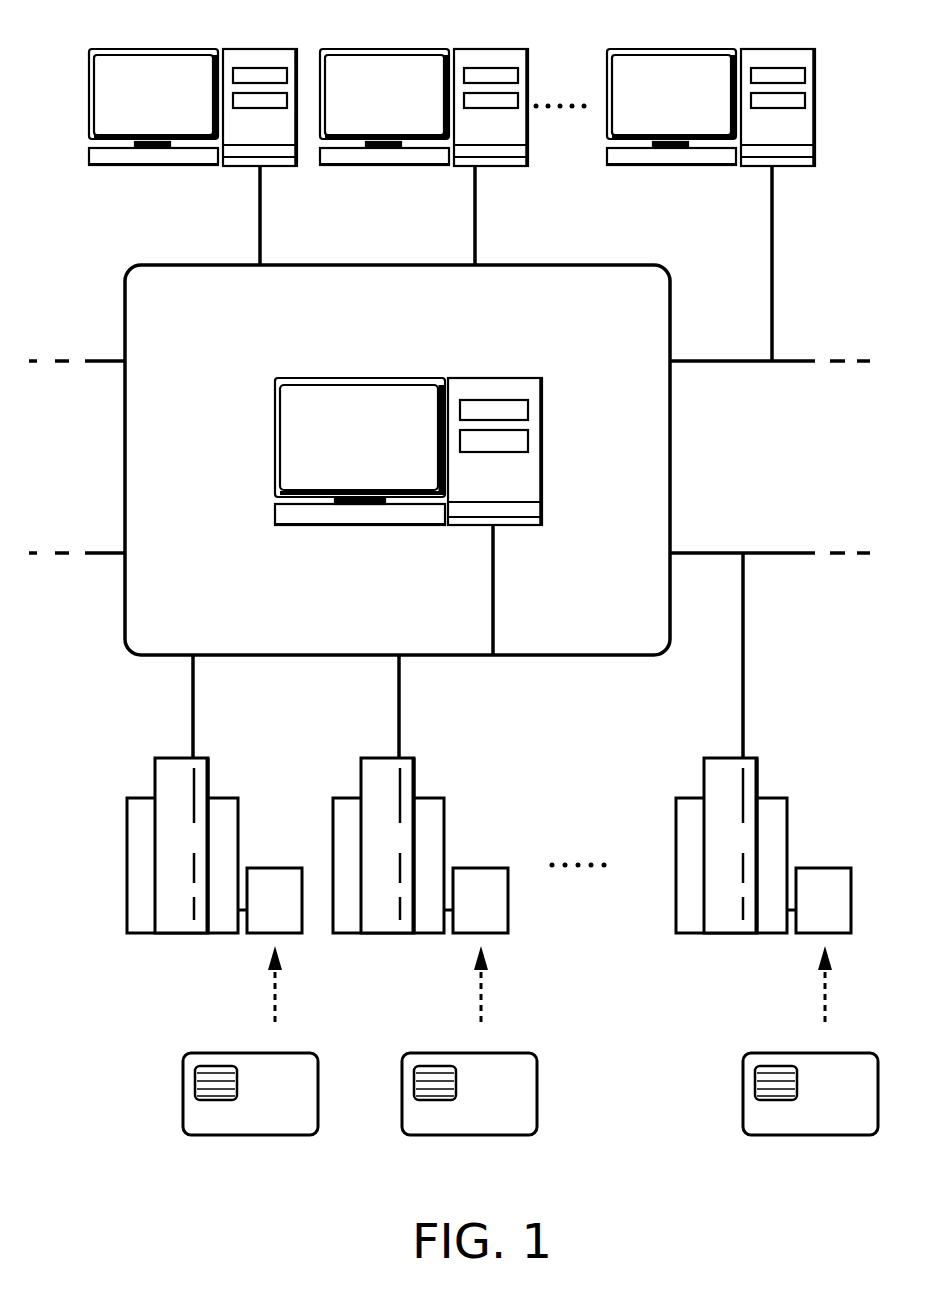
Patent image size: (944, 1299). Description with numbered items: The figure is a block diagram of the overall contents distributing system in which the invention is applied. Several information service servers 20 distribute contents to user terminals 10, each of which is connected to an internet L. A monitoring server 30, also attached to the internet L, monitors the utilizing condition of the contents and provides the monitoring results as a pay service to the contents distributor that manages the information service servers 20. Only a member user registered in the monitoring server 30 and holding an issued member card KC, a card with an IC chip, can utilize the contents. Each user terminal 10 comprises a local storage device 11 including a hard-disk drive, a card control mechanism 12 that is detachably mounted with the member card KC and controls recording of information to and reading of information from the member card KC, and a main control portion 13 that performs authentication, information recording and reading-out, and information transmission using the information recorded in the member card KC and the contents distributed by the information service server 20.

The information service server 20 is at (263, 49).
The internet L is at (590, 264).
The monitoring server 30 is at (536, 378).
The user terminal 10 is at (212, 755).
The local storage device 11 is at (143, 797).
The card control mechanism 12 is at (272, 868).
The main control portion 13 is at (176, 922).
The member card KC is at (308, 1053).